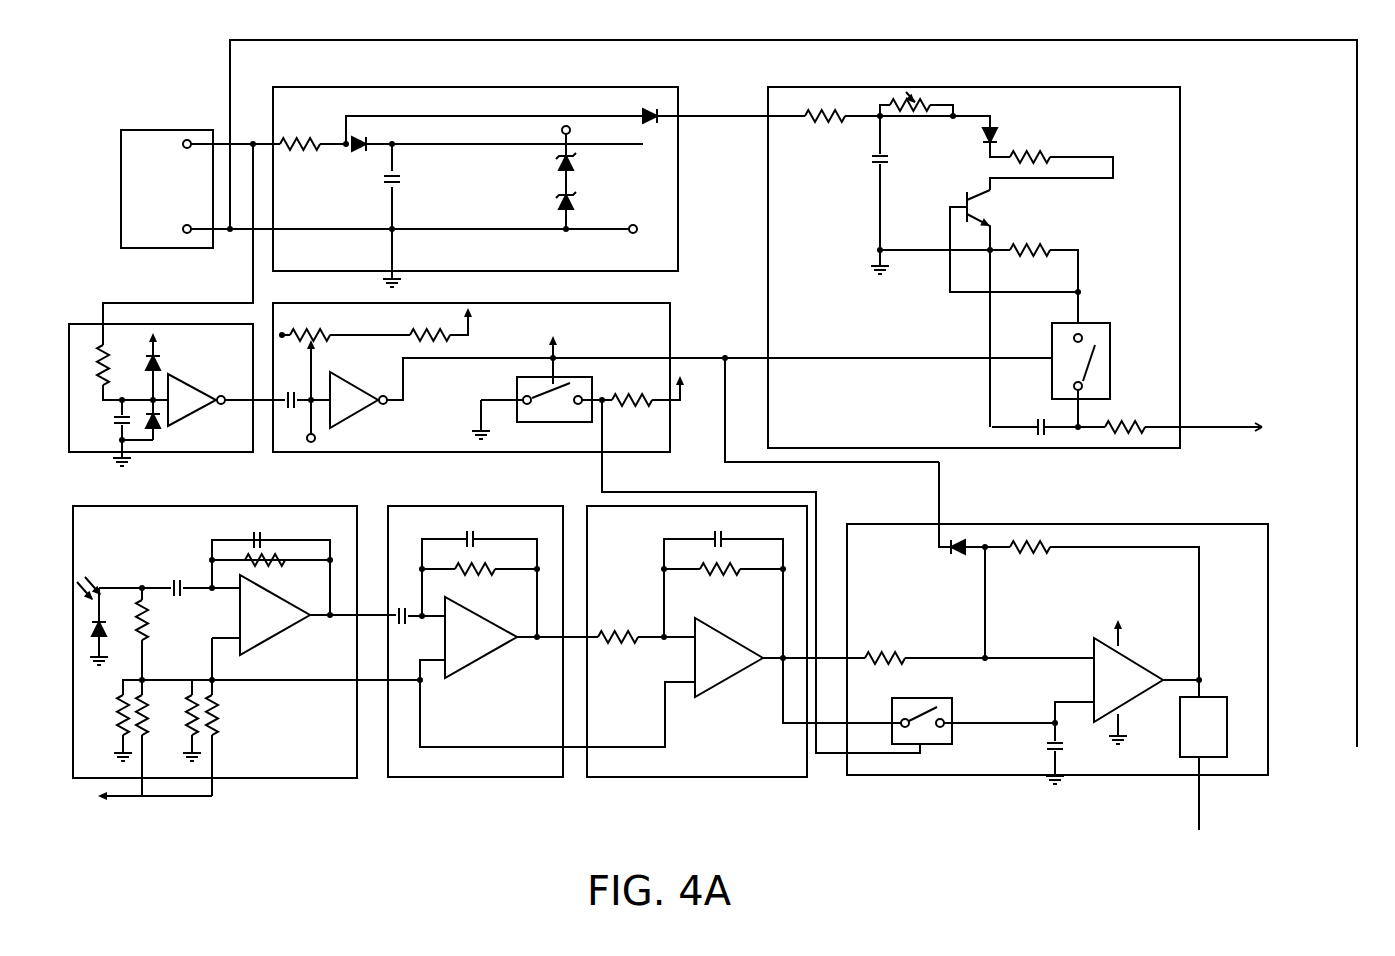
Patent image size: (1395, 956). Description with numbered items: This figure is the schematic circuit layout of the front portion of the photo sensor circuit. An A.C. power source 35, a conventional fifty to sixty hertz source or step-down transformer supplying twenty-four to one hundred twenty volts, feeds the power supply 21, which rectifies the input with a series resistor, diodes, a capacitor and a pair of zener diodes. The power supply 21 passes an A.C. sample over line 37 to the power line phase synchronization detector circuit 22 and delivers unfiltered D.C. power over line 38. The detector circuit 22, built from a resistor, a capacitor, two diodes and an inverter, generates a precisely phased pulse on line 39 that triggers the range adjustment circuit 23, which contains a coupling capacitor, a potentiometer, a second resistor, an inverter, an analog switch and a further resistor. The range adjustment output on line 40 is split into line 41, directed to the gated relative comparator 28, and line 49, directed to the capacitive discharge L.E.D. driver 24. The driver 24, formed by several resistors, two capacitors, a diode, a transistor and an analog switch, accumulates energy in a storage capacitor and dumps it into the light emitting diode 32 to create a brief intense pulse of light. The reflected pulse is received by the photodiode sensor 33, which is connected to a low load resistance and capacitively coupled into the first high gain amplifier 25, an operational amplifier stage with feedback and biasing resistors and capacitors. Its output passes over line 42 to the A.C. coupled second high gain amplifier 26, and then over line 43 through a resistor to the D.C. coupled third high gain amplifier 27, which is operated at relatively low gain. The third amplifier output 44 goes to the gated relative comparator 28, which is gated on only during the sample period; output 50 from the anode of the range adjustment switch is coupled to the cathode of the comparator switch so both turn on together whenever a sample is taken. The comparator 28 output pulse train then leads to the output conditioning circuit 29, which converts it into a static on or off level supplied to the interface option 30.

The power supply 21 is at (680, 174).
The power line phase synchronization detector circuit 22 is at (222, 455).
The range adjustment circuit 23 is at (680, 318).
The capacitive discharge L.E.D. driver 24 is at (1033, 267).
The first high gain amplifier 25 is at (246, 673).
The second high gain amplifier 26 is at (477, 780).
The third high gain amplifier 27 is at (700, 780).
The gated relative comparator 28 is at (1084, 683).
The output conditioning circuit 29 is at (1165, 865).
The interface option 30 is at (1382, 725).
The light emitting diode 32 is at (985, 147).
The photodiode sensor 33 is at (104, 621).
The A.C. power source 35 is at (165, 130).
The line 37 is at (253, 277).
The line 38 is at (711, 116).
The line 39 is at (266, 403).
The line 40 is at (693, 358).
The line 41 is at (744, 365).
The line 42 is at (372, 507).
The line 43 is at (575, 632).
The line 44 is at (832, 660).
The line 49 is at (940, 497).
The output 50 is at (832, 756).